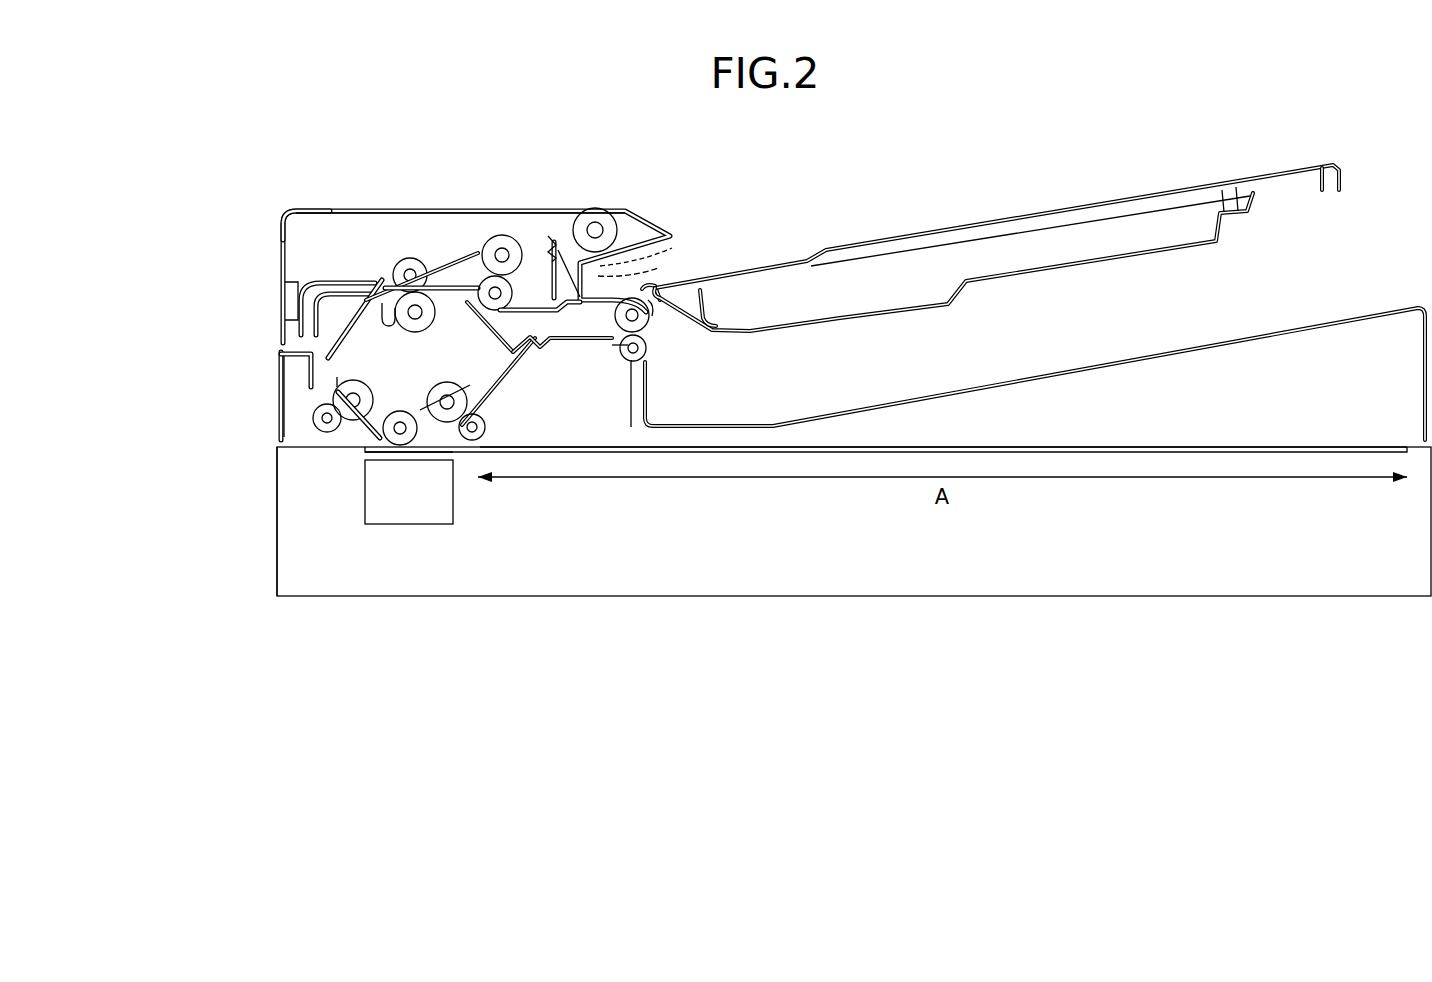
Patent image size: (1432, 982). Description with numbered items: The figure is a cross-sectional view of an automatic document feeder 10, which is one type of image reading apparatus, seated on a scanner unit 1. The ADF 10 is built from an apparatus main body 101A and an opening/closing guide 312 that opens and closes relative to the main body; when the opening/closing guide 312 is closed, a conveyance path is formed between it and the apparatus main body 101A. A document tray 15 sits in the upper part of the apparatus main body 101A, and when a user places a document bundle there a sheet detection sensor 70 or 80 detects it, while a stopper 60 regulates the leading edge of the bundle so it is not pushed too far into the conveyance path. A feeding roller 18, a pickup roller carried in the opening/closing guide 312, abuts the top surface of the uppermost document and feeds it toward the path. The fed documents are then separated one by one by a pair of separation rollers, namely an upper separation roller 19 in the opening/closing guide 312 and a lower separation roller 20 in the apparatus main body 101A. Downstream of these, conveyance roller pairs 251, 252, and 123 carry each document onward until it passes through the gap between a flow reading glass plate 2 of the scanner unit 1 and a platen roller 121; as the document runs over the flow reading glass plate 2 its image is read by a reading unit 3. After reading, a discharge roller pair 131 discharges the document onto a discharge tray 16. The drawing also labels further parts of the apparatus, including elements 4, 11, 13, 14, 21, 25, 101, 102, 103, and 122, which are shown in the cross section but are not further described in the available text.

The scanner unit 1 is at (662, 597).
The flow reading glass plate 2 is at (365, 453).
The reading unit 3 is at (408, 525).
The platen glass 4 is at (1195, 446).
The automatic document feeder (ADF) 10 is at (278, 238).
The document feeding path 11 is at (514, 228).
The discharge guide 13 is at (565, 343).
The document conveying path 14 is at (455, 252).
The document tray 15 is at (1142, 196).
The discharge tray 16 is at (745, 421).
The feeding roller (pickup roller) 18 is at (598, 207).
The upper separation roller (feed roller) 19 is at (492, 232).
The lower separation roller (retard roller) 20 is at (510, 345).
The conveying roller 21 is at (410, 334).
The guide member 25 is at (312, 350).
The stopper 60 is at (566, 248).
The sheet detection sensor 70 is at (643, 278).
The sheet detection sensor 80 is at (672, 248).
The frame 101 is at (191, 467).
The apparatus main body 101A is at (268, 362).
The lower frame 102 is at (268, 470).
The upper frame 103 is at (268, 392).
The platen roller 121 is at (400, 410).
The discharge roller 122 is at (453, 440).
The conveyance roller pair 123 is at (447, 382).
The discharge roller pair 131 is at (655, 322).
The conveyance roller pair 251 is at (408, 257).
The conveyance roller pair 252 is at (328, 440).
The opening/closing guide 312 is at (296, 210).